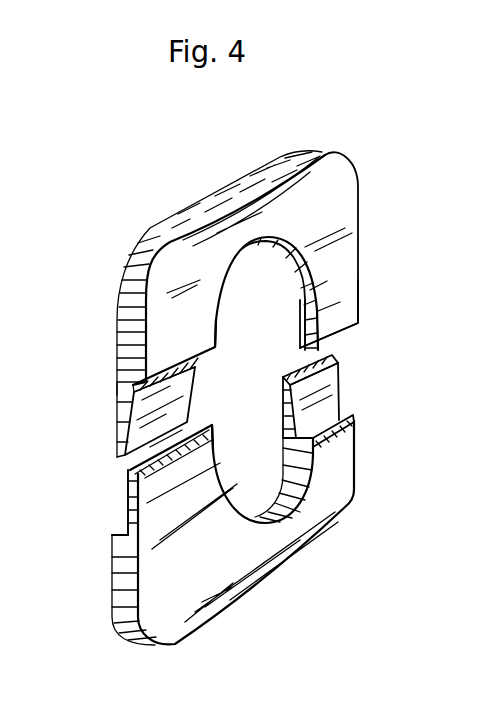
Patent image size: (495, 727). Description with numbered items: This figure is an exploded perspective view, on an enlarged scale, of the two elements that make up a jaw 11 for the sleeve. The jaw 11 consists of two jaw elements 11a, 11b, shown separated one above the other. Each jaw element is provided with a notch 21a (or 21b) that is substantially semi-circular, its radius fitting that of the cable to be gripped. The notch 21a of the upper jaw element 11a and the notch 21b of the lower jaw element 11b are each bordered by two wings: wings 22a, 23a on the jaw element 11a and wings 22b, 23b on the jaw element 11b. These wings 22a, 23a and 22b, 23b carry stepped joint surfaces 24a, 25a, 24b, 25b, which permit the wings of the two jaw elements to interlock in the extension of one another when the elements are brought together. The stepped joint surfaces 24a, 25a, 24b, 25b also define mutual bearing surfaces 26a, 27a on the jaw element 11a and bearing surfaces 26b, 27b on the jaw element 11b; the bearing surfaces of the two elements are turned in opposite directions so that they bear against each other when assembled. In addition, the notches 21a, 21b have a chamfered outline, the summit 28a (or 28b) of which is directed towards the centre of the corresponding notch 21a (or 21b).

The jaw 11 is at (363, 181).
The jaw element 11a is at (340, 232).
The jaw element 11b is at (340, 477).
The notch 21a is at (222, 288).
The notch 21b is at (215, 447).
The wing 22a is at (123, 417).
The wing 22b is at (133, 497).
The wing 23a is at (340, 306).
The wing 23b is at (338, 368).
The stepped joint surface 24a is at (125, 389).
The stepped joint surface 24b is at (118, 533).
The stepped joint surface 25a is at (297, 292).
The stepped joint surface 25b is at (354, 417).
The bearing surface 26a is at (168, 390).
The bearing surface 26b is at (131, 472).
The bearing surface 27a is at (300, 330).
The bearing surface 27b is at (318, 388).
The summit 28a is at (296, 290).
The summit 28b is at (297, 507).